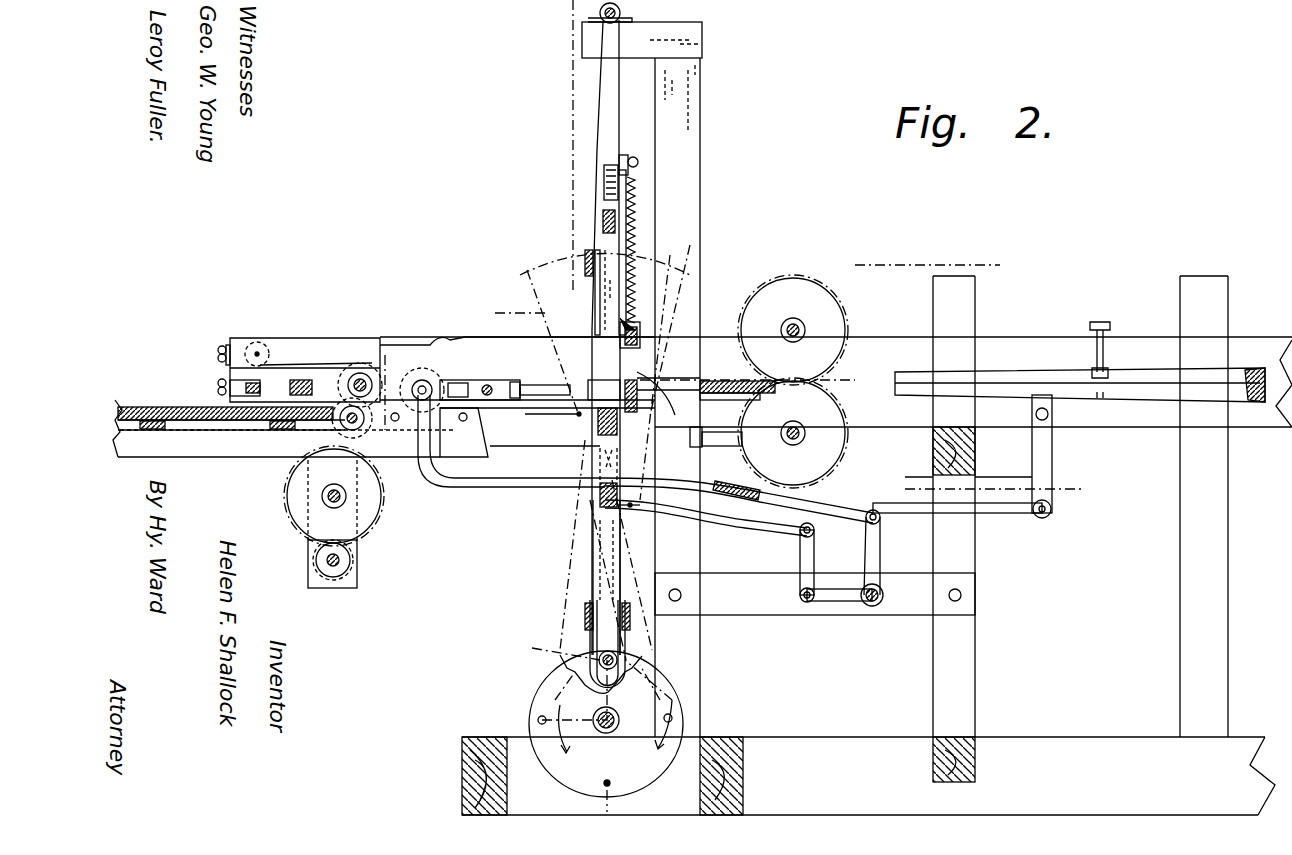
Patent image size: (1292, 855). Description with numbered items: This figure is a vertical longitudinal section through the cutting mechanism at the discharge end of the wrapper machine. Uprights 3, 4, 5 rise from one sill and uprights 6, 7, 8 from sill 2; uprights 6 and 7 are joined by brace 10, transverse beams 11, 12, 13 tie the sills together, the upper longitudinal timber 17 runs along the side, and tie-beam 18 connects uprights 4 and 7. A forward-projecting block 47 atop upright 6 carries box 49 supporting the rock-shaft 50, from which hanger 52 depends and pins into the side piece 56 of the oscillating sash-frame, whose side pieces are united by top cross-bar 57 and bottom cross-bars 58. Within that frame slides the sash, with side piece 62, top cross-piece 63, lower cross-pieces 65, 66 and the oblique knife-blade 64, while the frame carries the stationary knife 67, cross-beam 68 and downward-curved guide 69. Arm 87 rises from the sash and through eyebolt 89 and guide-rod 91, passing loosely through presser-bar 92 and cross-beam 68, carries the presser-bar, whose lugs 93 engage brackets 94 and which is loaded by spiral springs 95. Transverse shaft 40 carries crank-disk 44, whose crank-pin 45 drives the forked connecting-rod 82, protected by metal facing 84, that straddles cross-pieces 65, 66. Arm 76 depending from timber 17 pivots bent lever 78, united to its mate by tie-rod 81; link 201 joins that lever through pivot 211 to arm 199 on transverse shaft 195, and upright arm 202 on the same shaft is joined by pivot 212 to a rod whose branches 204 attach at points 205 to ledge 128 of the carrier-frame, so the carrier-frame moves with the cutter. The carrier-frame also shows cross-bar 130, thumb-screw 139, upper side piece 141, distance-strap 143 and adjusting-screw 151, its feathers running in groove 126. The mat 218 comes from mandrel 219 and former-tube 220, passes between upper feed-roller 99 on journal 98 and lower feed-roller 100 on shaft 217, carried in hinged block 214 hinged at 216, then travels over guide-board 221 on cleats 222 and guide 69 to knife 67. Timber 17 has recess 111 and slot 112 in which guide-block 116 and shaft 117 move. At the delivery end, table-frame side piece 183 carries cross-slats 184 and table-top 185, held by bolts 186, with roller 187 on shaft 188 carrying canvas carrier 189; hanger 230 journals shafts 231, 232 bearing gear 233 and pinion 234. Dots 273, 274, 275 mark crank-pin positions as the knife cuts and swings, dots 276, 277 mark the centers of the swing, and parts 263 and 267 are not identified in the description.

The sill 2 is at (868, 776).
The upright 3 is at (1090, 478).
The upright 4 is at (1002, 256).
The upright 5 is at (548, 14).
The upright 6 is at (696, 685).
The upright 7 is at (954, 506).
The upright 8 is at (1204, 506).
The longitudinal brace 10 is at (740, 600).
The transverse beam 11 is at (462, 756).
The transverse beam 12 is at (733, 748).
The transverse beam 13 is at (932, 758).
The upper longitudinal timber 17 is at (836, 407).
The tie-beam 18 is at (956, 436).
The transverse shaft 40 is at (607, 735).
The crank-disk 44 is at (648, 760).
The crank-pin 45 is at (598, 656).
The forward-projecting block 47 is at (676, 32).
The box 49 is at (636, 18).
The rock-shaft 50 is at (600, 11).
The hanger 52 is at (600, 104).
The side piece of sash-frame 56 is at (596, 292).
The cross-bar 57 is at (584, 262).
The cross-bars 58 is at (588, 626).
The side piece of sash 62 is at (604, 304).
The cross-piece 63 is at (602, 214).
The oblique knife-blade 64 is at (626, 283).
The cross-piece 65 is at (597, 436).
The cross-piece 66 is at (600, 501).
The stationary knife-blade 67 is at (597, 383).
The cross-beam 68 is at (656, 386).
The downward-curved guide 69 is at (642, 392).
The arm 76 is at (1050, 455).
The bent lever 78 is at (998, 514).
The tie-rod 81 is at (632, 506).
The connecting-rod 82 is at (619, 528).
The metal facing 84 is at (620, 576).
The arm 87 is at (616, 190).
The eyebolt 89 is at (624, 168).
The guide-rod 91 is at (644, 362).
The presser-bar 92 is at (640, 335).
The lugs 93 is at (628, 321).
The brackets 94 is at (600, 334).
The spiral springs 95 is at (629, 232).
The journal 98 is at (787, 330).
The upper feed-roller 99 is at (793, 330).
The lower feed-roller 100 is at (793, 433).
The recess 111 is at (458, 416).
The slot 112 is at (470, 390).
The guide-block 116 is at (502, 384).
The shaft 117 is at (490, 398).
The longitudinal groove 126 is at (460, 380).
The inner ledge 128 is at (330, 372).
The cross-bar 130 is at (262, 352).
The adjusting thumb-screw 139 is at (216, 388).
The side piece of upper carrier-frame 141 is at (316, 354).
The hinged distance-strap 143 is at (300, 378).
The adjusting-screw 151 is at (218, 356).
The side piece of table-frame 183 is at (279, 438).
The cross-slats 184 is at (158, 429).
The table-top 185 is at (135, 407).
The bolts 186 is at (459, 417).
The roller 187 is at (340, 424).
The shaft 188 is at (352, 408).
The canvas endless carrier 189 is at (128, 426).
The transverse shaft 195 is at (874, 608).
The arm 199 is at (838, 602).
The link 201 is at (808, 553).
The upright arm 202 is at (876, 553).
The branches of rod 204 is at (576, 486).
The pivotal attachment 205 is at (406, 389).
The pivot 211 is at (805, 602).
The pivot 212 is at (880, 505).
The hinged block 214 is at (736, 437).
The hinge 216 is at (690, 433).
The transverse shaft 217 is at (794, 432).
The mat of material 218 is at (846, 375).
The mandrel 219 is at (891, 375).
The former-tube 220 is at (1144, 375).
The guide-board 221 is at (719, 373).
The cleats 222 is at (724, 393).
The hanger 230 is at (350, 590).
The transverse shaft 231 is at (333, 502).
The transverse shaft 232 is at (333, 568).
The gear 233 is at (292, 516).
The pinion 234 is at (352, 563).
The link 263 is at (835, 503).
The pivot 267 is at (1052, 514).
The dot 273 is at (538, 722).
The dot 274 is at (605, 783).
The dot 275 is at (666, 724).
The dot 276 is at (640, 416).
The dot 277 is at (553, 414).